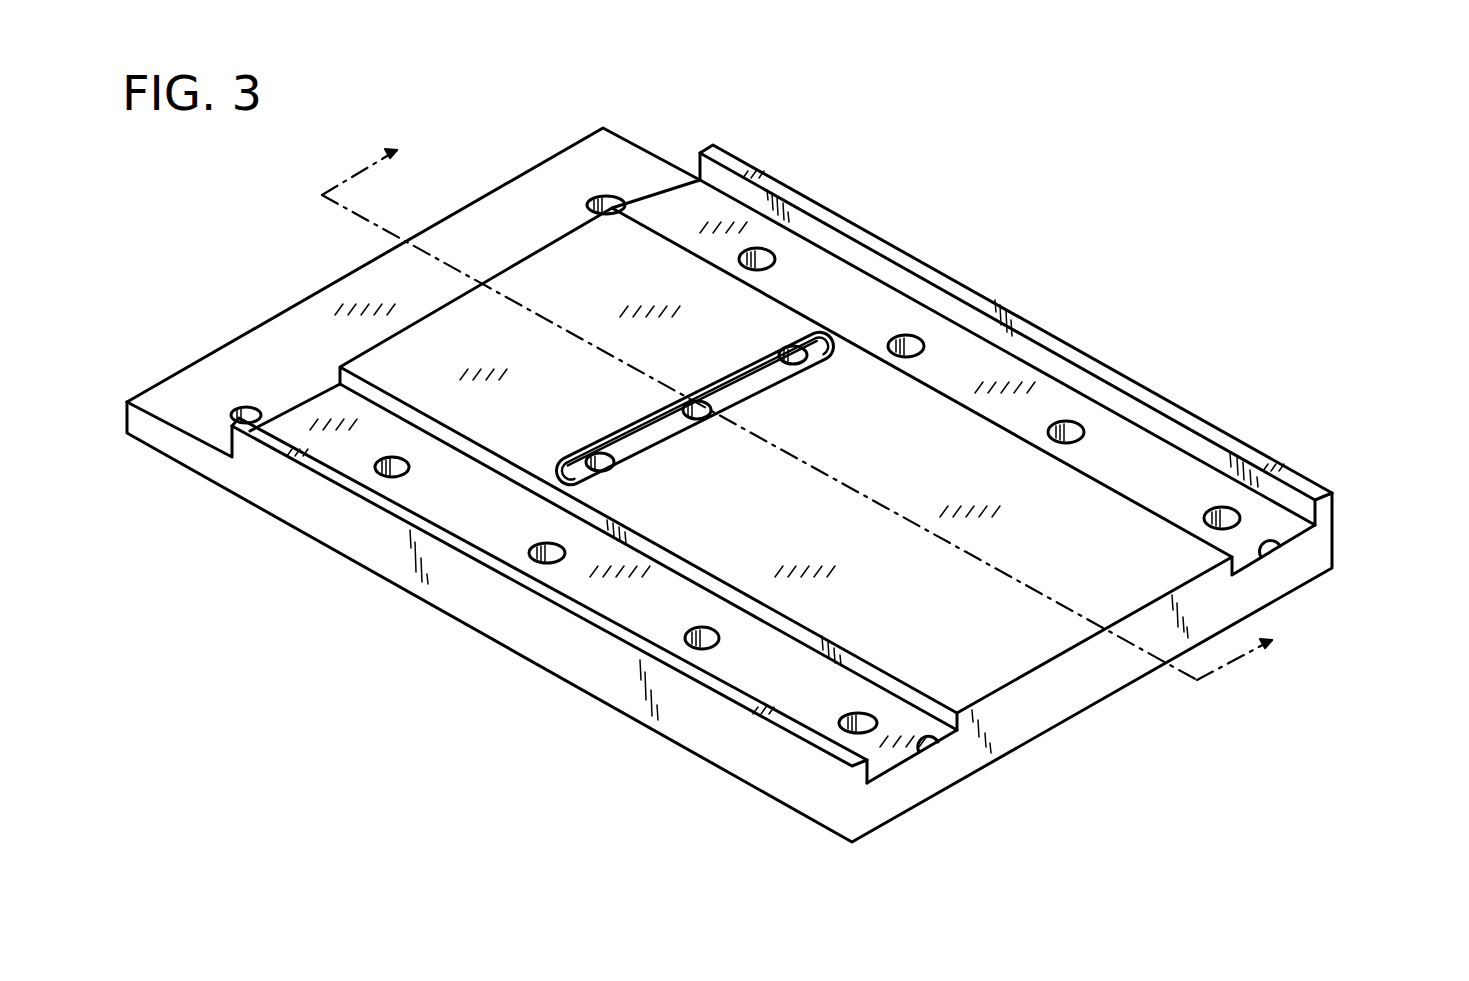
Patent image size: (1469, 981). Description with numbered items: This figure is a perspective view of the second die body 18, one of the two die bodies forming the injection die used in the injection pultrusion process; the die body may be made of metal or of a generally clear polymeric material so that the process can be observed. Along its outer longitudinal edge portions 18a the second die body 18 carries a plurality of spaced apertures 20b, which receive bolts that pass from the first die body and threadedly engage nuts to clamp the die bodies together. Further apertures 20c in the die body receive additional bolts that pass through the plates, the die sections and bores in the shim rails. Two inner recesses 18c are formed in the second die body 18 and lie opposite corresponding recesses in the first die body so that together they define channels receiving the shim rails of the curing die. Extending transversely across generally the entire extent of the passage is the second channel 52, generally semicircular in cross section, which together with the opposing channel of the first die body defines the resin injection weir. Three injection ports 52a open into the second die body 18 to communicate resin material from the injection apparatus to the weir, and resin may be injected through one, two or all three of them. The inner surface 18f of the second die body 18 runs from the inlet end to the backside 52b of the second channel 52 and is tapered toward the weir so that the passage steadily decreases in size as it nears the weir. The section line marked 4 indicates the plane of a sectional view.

The second die body 18 is at (1322, 556).
The outer longitudinal edge portions 18a is at (1308, 541).
The inner recesses 18c is at (1277, 543).
The inner surface 18f is at (1034, 648).
The apertures 20b is at (768, 260).
The apertures 20c is at (612, 200).
The second channel 52 is at (742, 395).
The injection ports 52a is at (796, 356).
The backside of the second channel 52b is at (708, 397).
The section line 4- 4 is at (807, 409).